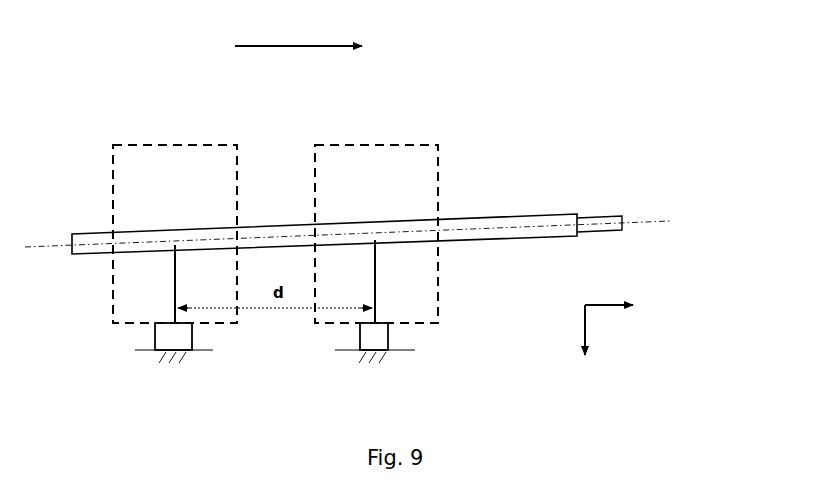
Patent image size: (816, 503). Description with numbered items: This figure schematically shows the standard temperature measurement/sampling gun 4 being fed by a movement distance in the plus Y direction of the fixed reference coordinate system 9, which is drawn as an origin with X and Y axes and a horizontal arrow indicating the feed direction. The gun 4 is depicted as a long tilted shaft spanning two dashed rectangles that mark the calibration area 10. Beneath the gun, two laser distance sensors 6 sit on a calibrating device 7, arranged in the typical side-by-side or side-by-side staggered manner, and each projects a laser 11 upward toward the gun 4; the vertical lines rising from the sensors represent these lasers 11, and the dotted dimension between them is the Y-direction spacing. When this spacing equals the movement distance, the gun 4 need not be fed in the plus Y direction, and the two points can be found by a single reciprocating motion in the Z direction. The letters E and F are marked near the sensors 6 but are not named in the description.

The standard temperature measurement/sampling gun 4 is at (155, 230).
The laser distance sensor 6 is at (195, 353).
The calibrating device 7 is at (150, 357).
The fixed reference coordinate system 9 is at (588, 302).
The calibration area 10 is at (238, 221).
The laser 11 is at (372, 290).
The support reaction E is at (150, 323).
The force F is at (186, 343).